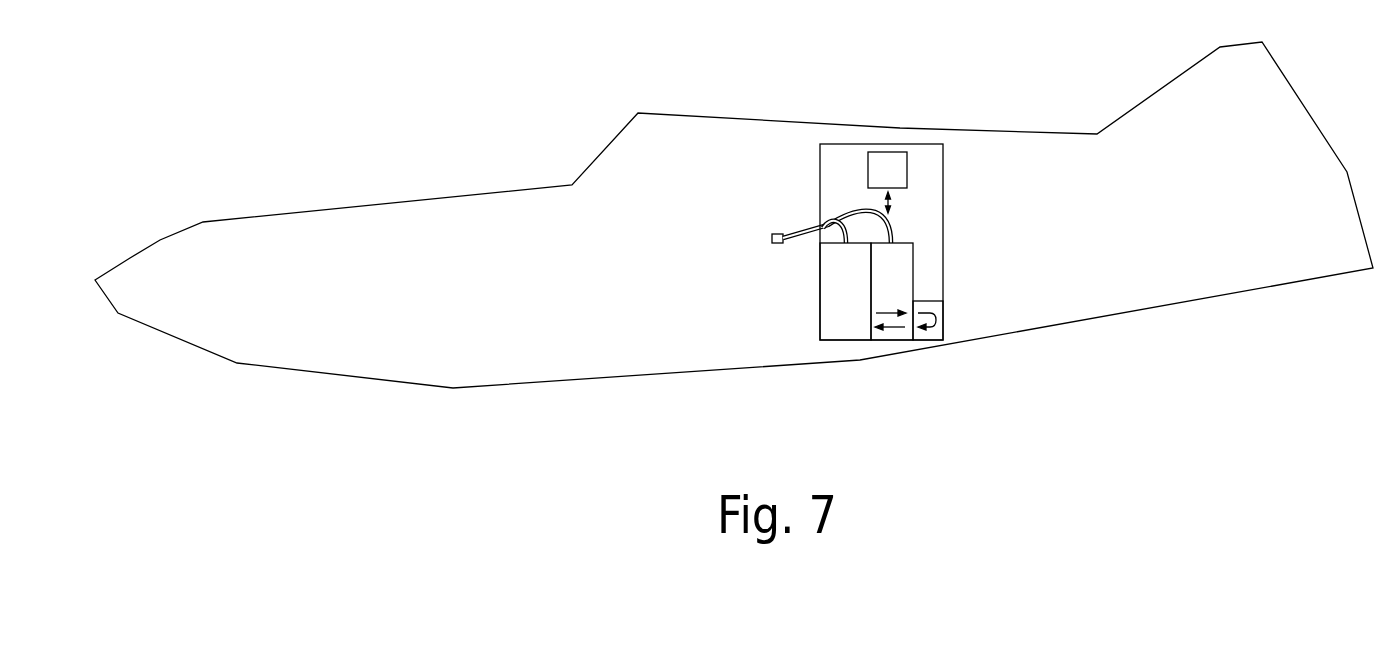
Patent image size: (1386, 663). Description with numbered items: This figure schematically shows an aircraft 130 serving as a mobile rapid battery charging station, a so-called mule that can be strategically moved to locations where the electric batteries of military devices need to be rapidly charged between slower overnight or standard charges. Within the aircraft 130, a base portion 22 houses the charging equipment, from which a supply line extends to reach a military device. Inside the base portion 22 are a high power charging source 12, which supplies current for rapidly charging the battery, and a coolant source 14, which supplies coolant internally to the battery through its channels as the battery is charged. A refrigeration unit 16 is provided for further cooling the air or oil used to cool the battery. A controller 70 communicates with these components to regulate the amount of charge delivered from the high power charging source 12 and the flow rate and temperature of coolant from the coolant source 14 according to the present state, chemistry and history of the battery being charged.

The aircraft 130 is at (772, 92).
The base portion 22 is at (945, 180).
The controller 70 is at (877, 181).
The high power charging source 12 is at (831, 286).
The coolant source 14 is at (879, 286).
The refrigeration unit 16 is at (919, 298).